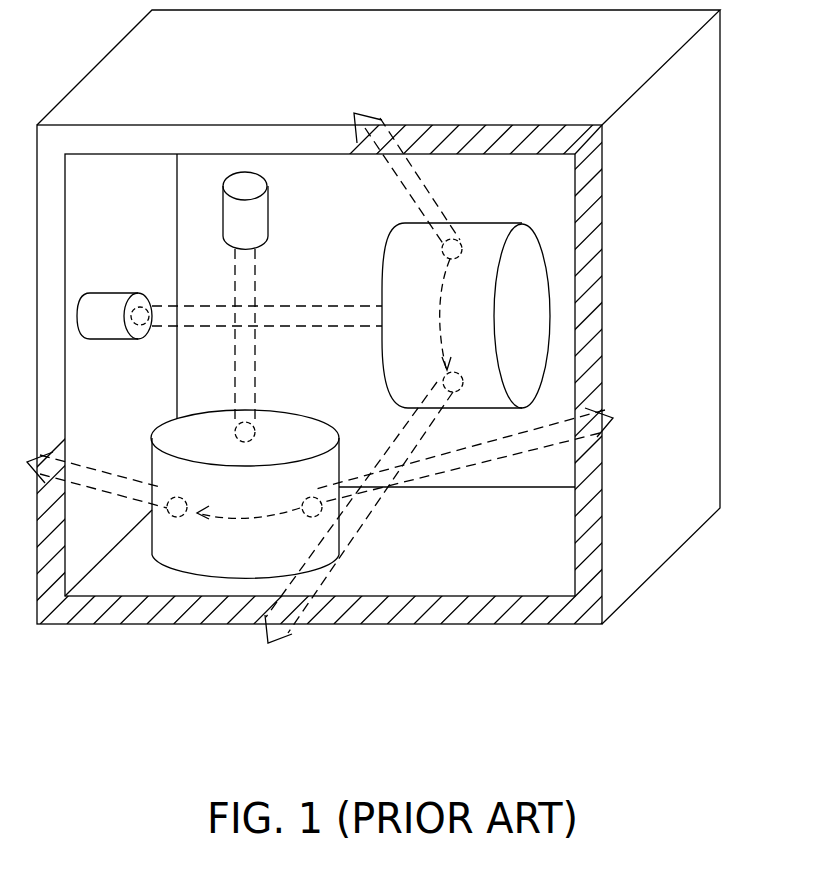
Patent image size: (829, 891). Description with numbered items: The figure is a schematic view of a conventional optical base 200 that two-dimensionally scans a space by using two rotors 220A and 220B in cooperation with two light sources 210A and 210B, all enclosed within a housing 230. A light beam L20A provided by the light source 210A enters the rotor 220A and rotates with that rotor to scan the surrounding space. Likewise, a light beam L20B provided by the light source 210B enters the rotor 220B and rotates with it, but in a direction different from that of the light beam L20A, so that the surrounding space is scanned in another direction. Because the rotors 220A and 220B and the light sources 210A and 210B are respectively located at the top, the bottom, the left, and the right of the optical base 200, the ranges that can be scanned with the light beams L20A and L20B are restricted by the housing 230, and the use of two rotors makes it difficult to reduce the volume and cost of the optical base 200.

The optical base 200 is at (699, 635).
The housing 230 is at (160, 87).
The light source 210A is at (256, 188).
The light source 210B is at (110, 302).
The rotor 220A is at (398, 258).
The rotor 220B is at (187, 427).
The light beam L20A is at (418, 178).
The light beam L20B is at (527, 453).